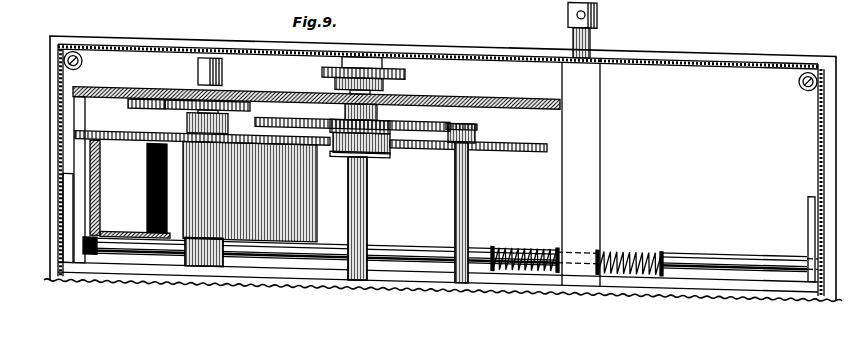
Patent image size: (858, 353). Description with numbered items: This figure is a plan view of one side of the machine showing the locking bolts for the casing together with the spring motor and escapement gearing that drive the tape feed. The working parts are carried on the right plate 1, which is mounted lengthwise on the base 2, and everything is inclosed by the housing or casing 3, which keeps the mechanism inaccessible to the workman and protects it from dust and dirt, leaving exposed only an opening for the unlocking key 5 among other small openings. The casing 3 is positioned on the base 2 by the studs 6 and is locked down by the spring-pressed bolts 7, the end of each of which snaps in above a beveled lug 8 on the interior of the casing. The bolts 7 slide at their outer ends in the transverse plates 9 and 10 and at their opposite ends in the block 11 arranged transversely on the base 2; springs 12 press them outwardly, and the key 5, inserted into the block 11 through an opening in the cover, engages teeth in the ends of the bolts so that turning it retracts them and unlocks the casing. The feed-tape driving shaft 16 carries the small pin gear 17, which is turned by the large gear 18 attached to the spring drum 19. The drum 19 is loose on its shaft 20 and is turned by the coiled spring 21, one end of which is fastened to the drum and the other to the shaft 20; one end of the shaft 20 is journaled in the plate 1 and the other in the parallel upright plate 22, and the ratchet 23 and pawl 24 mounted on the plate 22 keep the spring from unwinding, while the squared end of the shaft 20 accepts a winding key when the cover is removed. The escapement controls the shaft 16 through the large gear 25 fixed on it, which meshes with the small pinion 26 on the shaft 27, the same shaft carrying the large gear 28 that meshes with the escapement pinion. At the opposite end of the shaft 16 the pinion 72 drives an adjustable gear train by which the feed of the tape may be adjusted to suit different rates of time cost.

The right plate 1 is at (649, 229).
The base 2 is at (622, 23).
The casing 3 is at (798, 72).
The unlocking key 5 is at (595, 30).
The studs 6 is at (440, 75).
The spring-pressed bolts 7 is at (693, 211).
The beveled lug 8 is at (763, 187).
The transverse plate 9 is at (30, 117).
The transverse plate 10 is at (577, 249).
The block 11 is at (595, 174).
The springs 12 is at (563, 199).
The feed-tape driving shaft 16 is at (372, 219).
The small pin gear 17 is at (333, 107).
The large gear 18 is at (90, 95).
The spring drum 19 is at (235, 176).
The drum shaft 20 is at (167, 48).
The coiled spring 21 is at (97, 152).
The upright plate 22 is at (227, 50).
The ratchet 23 is at (207, 88).
The pawl 24 is at (145, 87).
The large gear 25 is at (360, 80).
The small pinion 26 is at (476, 130).
The shaft 27 is at (476, 213).
The large gear 28 is at (468, 159).
The pinion 72 is at (379, 76).